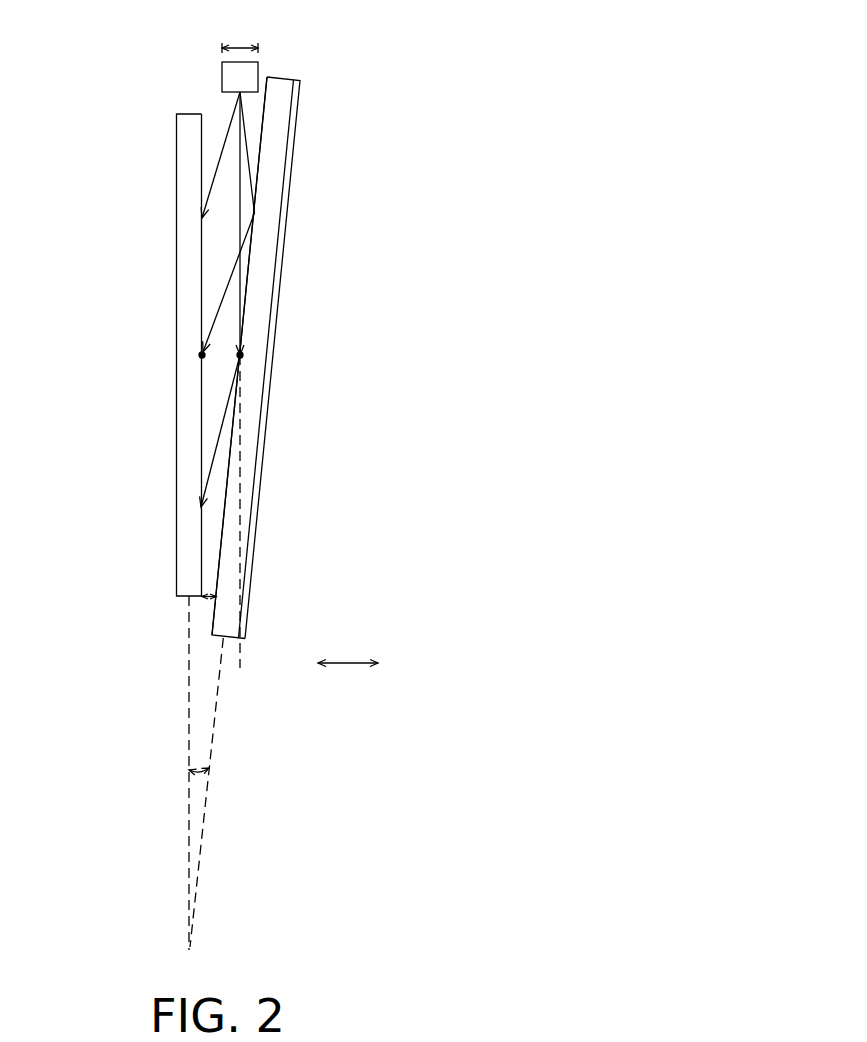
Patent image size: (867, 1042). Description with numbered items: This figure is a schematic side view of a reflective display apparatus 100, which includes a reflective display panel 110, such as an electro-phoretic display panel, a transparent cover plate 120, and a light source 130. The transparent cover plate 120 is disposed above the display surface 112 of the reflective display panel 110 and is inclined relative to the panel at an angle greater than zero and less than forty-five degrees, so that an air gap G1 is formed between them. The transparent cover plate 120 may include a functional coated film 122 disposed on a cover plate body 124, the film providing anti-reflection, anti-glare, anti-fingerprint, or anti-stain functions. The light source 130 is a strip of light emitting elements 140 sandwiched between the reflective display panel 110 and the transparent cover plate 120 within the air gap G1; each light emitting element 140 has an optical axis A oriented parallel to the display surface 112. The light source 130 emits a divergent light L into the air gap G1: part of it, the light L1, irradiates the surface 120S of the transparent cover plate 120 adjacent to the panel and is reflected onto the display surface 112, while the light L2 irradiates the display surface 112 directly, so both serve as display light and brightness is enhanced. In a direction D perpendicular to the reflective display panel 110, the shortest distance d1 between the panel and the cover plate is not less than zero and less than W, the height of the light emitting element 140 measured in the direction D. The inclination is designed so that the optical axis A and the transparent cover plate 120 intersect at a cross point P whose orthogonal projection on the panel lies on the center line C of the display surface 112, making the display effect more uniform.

The reflective display apparatus 100 is at (525, 848).
The reflective display panel 110 is at (147, 355).
The display surface 112 is at (211, 292).
The transparent cover plate 120 is at (315, 358).
The functional coated film 122 is at (290, 152).
The cover plate body 124 is at (282, 113).
The surface of the transparent cover plate 120S is at (217, 511).
The light source 130 is at (227, 77).
The light emitting element 140 is at (165, 79).
The height of the light emitting element W is at (242, 43).
The light L is at (166, 299).
The light L1 is at (245, 132).
The light L2 is at (212, 173).
The cross point P is at (238, 349).
The center line C is at (202, 355).
The air gap G1 is at (219, 420).
The shortest distance d1 is at (207, 602).
The optical axis A is at (236, 525).
The direction D is at (361, 665).